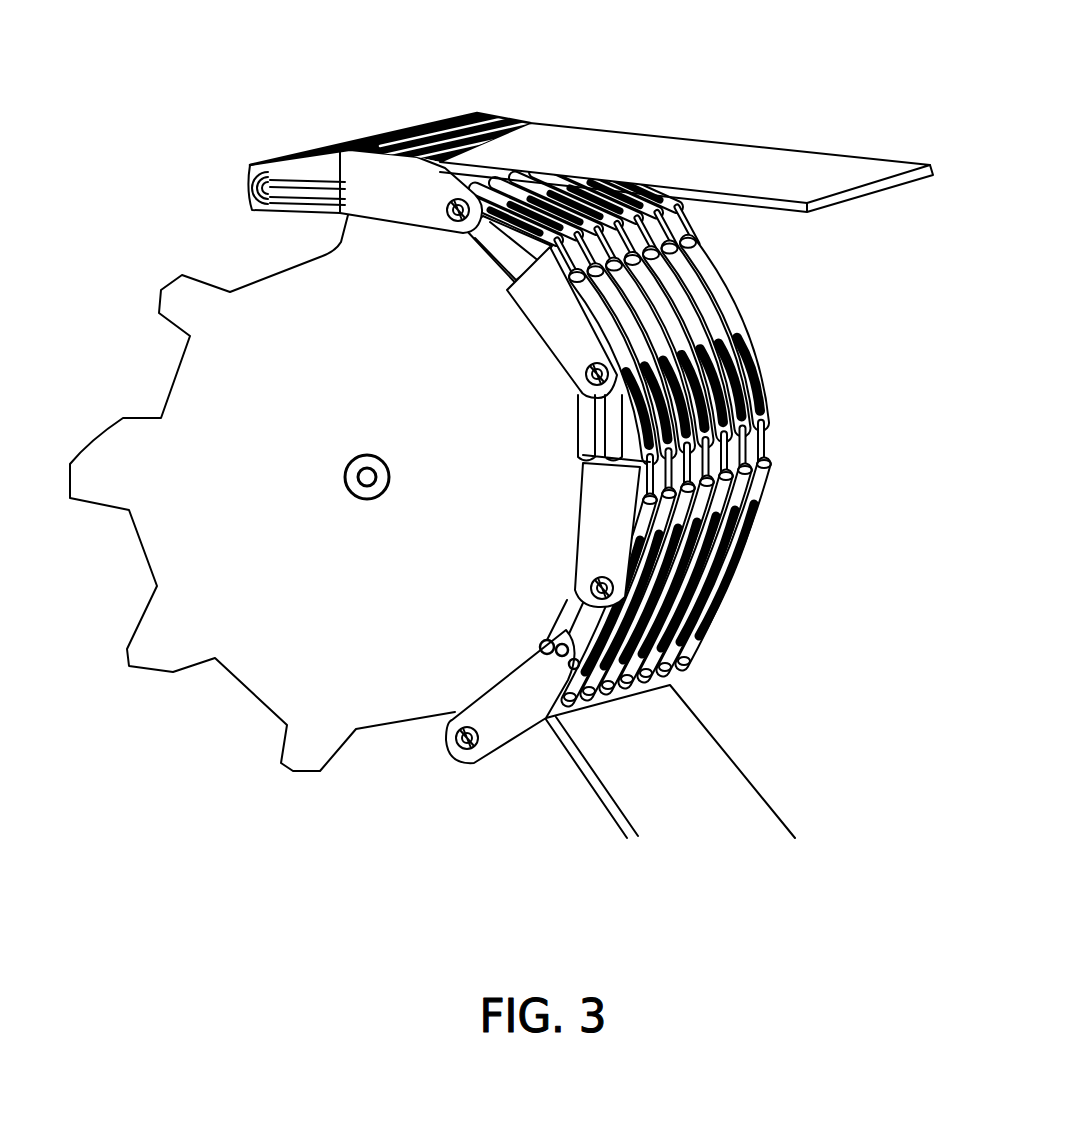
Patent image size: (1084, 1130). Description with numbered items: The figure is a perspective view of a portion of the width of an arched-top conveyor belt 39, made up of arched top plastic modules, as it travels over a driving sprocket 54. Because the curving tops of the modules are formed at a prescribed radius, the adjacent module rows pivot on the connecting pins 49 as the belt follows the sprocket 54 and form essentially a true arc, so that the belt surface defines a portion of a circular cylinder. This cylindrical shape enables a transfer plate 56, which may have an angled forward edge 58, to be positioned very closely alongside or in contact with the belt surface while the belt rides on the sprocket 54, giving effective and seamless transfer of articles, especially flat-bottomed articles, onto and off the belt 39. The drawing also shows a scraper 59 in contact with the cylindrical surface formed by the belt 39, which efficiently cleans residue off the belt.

The belt 39 is at (590, 386).
The connecting pins 49 is at (448, 225).
The driving sprocket 54 is at (375, 559).
The transfer plate 56 is at (763, 158).
The angled forward edge 58 is at (527, 120).
The scraper 59 is at (723, 753).